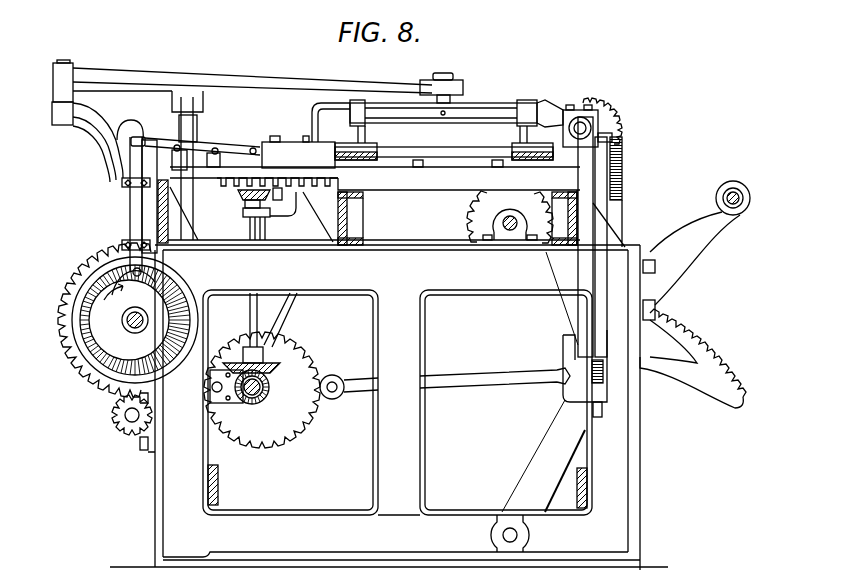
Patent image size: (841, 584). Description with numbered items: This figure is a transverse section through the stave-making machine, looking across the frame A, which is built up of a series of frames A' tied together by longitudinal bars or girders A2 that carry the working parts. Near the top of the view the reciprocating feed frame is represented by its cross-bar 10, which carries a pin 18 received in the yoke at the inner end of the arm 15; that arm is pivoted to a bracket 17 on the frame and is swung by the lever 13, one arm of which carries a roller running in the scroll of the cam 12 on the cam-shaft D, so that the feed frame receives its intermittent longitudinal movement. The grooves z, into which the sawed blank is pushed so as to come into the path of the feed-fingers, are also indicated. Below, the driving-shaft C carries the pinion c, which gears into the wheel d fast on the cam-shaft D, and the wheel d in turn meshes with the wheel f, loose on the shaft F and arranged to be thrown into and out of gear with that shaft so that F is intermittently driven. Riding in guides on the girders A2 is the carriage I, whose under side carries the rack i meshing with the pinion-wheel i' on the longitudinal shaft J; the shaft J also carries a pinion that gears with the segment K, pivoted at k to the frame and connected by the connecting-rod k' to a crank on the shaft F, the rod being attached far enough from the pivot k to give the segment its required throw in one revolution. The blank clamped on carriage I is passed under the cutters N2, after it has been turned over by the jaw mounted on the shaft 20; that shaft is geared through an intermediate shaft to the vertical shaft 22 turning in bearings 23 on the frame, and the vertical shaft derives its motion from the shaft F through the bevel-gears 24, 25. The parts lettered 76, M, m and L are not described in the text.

The frame A is at (389, 407).
The frames A' is at (399, 507).
The longitudinal bars or girders A2 is at (369, 194).
The cross-bar 10 is at (492, 120).
The grooves z is at (415, 122).
The pin 18 is at (441, 78).
The arm 15 is at (252, 85).
The end block 76 is at (62, 85).
The bracket 17 is at (107, 167).
The eccentric rod M is at (128, 212).
The roller m is at (144, 134).
The lever L is at (202, 148).
The carriage I is at (306, 135).
The lever 13 is at (193, 196).
The rack i is at (277, 209).
The pinion-wheel i' is at (502, 217).
The longitudinal shaft J is at (510, 216).
The cutters N2 is at (620, 130).
The shaft 20 is at (623, 155).
The cam 12 is at (82, 339).
The cam-shaft D is at (135, 308).
The gear-wheel d is at (103, 320).
The driving-shaft C is at (122, 415).
The pinion c is at (129, 425).
The wheel f is at (262, 390).
The shaft F is at (270, 387).
The bevel-gear 24 is at (258, 402).
The bevel-gear 25 is at (258, 362).
The vertical shaft 22 is at (249, 328).
The bearings 23 is at (280, 320).
The connecting-rod k' is at (445, 378).
The pivot k is at (540, 402).
The segment K is at (695, 294).